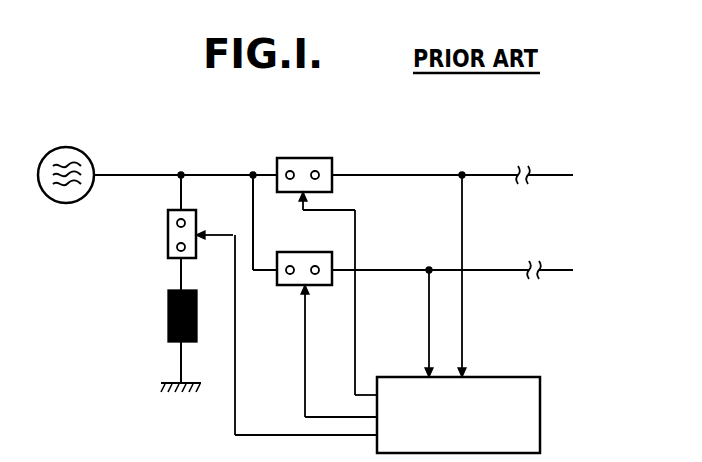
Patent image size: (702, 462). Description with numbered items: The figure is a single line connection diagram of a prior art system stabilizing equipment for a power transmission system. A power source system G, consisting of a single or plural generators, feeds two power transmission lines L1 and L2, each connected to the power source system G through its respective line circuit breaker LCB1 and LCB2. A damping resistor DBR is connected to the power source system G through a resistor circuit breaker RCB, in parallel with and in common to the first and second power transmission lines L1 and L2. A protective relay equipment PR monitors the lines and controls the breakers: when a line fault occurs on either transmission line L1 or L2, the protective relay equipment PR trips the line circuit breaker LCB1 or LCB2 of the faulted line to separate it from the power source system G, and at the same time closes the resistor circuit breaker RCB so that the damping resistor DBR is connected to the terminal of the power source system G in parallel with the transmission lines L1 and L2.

The power source system G is at (68, 203).
The resistor circuit breaker RCB is at (167, 237).
The damping resistor DBR is at (167, 312).
The line circuit breaker LCB1 is at (302, 158).
The line circuit breaker LCB2 is at (299, 245).
The power transmission line L1 is at (425, 172).
The power transmission line L2 is at (397, 270).
The protective relay equipment PR is at (541, 397).